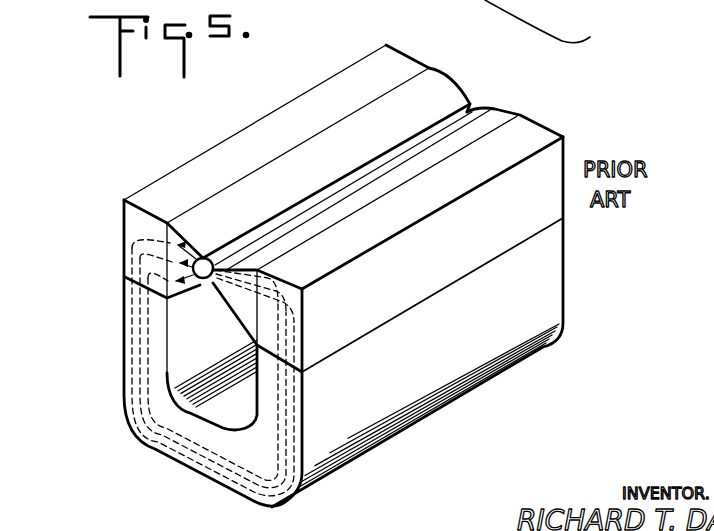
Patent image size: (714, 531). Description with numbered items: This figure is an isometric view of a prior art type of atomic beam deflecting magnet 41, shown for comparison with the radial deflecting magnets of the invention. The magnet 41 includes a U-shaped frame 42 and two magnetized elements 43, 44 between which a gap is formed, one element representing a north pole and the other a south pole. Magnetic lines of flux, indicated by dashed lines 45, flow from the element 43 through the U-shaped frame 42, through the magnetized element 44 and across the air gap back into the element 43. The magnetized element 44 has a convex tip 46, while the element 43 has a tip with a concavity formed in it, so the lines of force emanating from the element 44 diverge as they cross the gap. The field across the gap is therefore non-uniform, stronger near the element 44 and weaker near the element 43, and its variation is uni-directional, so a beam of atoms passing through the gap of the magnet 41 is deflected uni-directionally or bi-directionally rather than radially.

The deflecting magnet 41 is at (565, 265).
The U-shaped frame 42 is at (162, 180).
The magnetized element 43 is at (225, 200).
The magnetized element 44 is at (232, 311).
The magnetic lines of flux 45 is at (204, 255).
The convex tip 46 is at (203, 290).